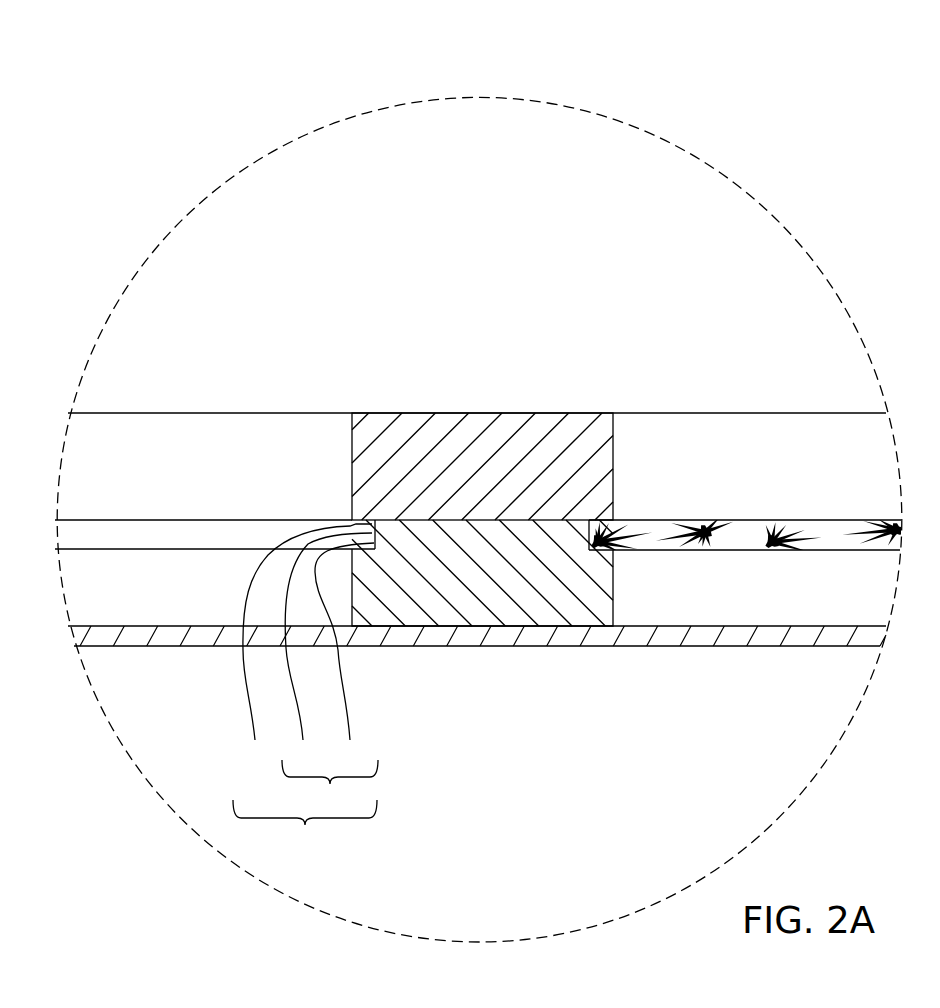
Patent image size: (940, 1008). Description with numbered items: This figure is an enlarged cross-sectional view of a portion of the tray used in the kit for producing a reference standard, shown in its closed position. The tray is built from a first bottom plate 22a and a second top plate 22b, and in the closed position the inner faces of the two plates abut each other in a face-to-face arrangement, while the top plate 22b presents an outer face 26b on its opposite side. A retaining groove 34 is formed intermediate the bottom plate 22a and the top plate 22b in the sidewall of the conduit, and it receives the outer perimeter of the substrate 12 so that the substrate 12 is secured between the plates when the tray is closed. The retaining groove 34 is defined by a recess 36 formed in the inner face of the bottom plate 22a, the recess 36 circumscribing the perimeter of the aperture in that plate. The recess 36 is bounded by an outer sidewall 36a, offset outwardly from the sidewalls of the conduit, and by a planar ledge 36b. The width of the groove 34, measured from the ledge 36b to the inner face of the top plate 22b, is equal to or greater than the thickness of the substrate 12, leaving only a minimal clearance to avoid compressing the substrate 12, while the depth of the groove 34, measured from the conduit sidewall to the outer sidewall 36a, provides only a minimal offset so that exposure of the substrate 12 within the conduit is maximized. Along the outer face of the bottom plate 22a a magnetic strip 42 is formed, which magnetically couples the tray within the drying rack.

The substrate 12 is at (830, 540).
The first bottom plate 22a is at (166, 640).
The second top plate 22b is at (241, 407).
The outer face 26b is at (215, 643).
The retaining groove 34 is at (305, 823).
The recess 36 is at (330, 783).
The outer sidewall 36a is at (344, 652).
The planar ledge 36b is at (328, 647).
The magnetic strip 42 is at (219, 645).